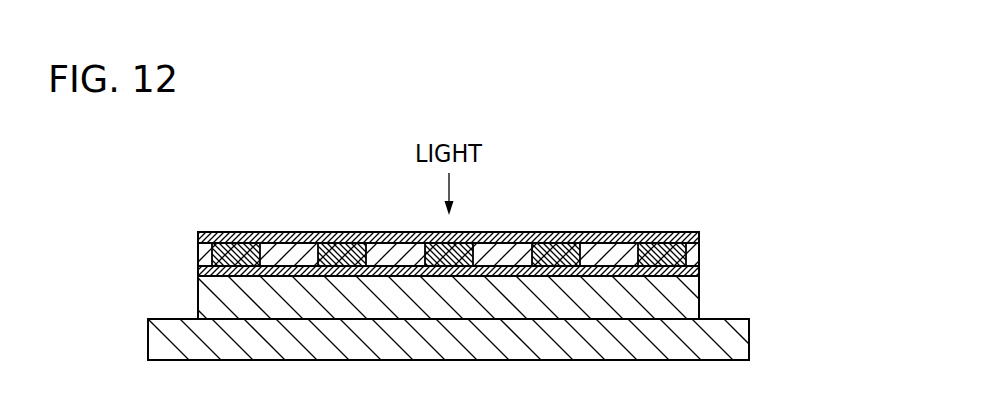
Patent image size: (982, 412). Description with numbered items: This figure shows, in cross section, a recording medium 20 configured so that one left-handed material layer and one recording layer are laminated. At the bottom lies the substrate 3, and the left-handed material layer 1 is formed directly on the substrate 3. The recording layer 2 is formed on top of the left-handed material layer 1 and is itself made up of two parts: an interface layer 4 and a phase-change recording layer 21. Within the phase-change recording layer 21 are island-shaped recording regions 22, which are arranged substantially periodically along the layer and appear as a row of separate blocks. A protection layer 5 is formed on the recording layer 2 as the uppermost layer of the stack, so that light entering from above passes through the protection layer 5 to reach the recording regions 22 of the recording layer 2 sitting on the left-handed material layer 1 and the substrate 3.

The recording medium 20 is at (745, 171).
The substrate 3 is at (737, 337).
The left-handed material layer 1 is at (699, 292).
The interface layer 4 is at (699, 272).
The phase-change recording layer 21 is at (699, 255).
The recording regions 22 is at (559, 255).
The protection layer 5 is at (667, 237).
The recording layer 2 is at (786, 207).